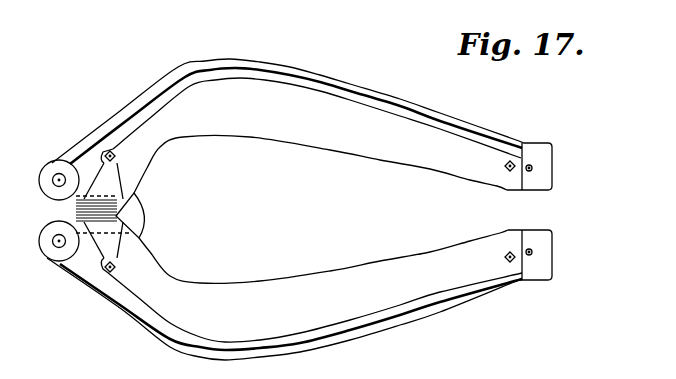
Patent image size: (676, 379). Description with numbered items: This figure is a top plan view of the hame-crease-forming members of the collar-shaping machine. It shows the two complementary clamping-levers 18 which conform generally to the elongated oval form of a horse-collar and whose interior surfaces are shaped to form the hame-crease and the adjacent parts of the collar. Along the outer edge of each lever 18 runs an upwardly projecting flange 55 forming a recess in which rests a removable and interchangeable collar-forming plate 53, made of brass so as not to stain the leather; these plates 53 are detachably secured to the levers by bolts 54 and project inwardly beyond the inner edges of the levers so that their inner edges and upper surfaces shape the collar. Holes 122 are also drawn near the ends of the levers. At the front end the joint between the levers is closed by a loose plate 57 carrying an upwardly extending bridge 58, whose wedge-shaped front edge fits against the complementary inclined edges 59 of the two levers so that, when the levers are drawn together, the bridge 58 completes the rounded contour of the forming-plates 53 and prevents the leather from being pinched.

The clamping-lever 18 is at (213, 62).
The flange 55 is at (409, 105).
The collar-forming plate 53 is at (270, 141).
The bolt 54 is at (117, 156).
The hole 122 is at (533, 168).
The inclined edge 59 is at (133, 191).
The plate 57 is at (76, 210).
The bridge 58 is at (136, 213).